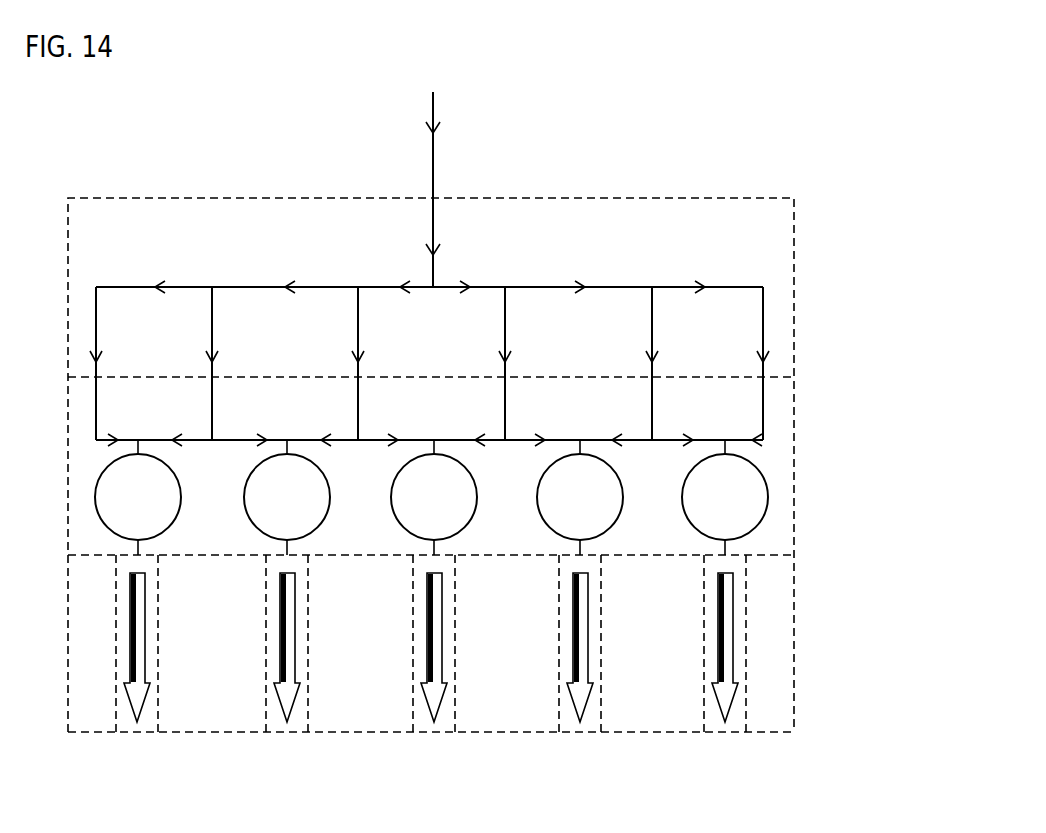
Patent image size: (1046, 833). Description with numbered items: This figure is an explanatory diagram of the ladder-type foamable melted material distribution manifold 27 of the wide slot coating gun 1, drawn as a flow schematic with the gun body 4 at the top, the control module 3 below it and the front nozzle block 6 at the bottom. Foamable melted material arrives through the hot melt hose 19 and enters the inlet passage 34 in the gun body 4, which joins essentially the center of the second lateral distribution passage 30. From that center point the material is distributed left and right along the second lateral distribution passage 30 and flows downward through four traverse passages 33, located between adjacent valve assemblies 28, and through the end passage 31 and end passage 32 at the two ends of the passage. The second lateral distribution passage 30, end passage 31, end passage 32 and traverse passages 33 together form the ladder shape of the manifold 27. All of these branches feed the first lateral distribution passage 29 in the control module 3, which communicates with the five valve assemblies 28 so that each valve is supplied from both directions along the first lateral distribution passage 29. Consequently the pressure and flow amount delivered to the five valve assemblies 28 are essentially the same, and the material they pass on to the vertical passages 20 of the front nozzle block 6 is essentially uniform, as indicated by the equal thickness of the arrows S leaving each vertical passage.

The wide slot coating gun 1 is at (800, 195).
The control module 3 is at (794, 492).
The gun body 4 is at (794, 282).
The front nozzle block 6 is at (794, 645).
The hot melt hose 19 is at (433, 148).
The vertical passages 20 is at (767, 762).
The foamable melted material distribution manifold 27 is at (429, 343).
The valve assemblies 28 is at (609, 485).
The first lateral distribution passage 29 is at (420, 440).
The second lateral distribution passage 30 is at (527, 287).
The end passage 31 is at (763, 417).
The end passage 32 is at (96, 410).
The traverse passages 33 is at (698, 318).
The inlet passage 34 is at (433, 218).
The arrows S is at (431, 647).